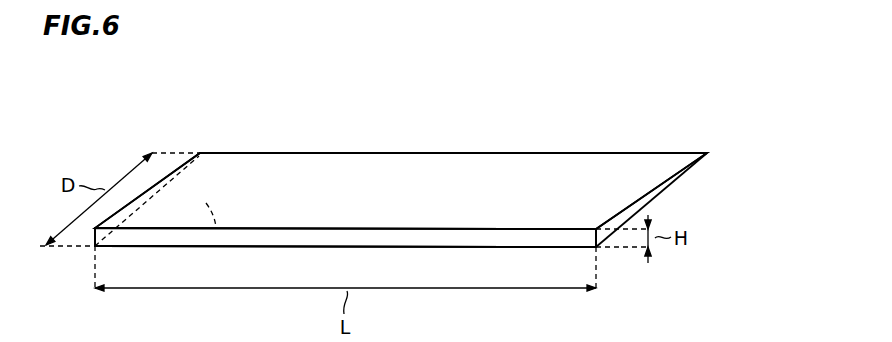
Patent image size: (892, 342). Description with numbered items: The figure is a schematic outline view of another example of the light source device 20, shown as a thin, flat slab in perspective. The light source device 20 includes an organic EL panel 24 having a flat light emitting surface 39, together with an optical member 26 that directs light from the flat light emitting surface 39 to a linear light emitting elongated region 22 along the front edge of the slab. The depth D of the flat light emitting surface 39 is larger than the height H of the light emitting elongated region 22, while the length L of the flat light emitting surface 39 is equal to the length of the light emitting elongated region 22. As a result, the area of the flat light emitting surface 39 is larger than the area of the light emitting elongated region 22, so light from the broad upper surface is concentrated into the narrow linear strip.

The light source device 20 is at (168, 107).
The light emitting elongated region 22 is at (276, 237).
The organic EL panel 24 is at (503, 248).
The optical member 26 is at (513, 188).
The flat light emitting surface 39 is at (216, 228).